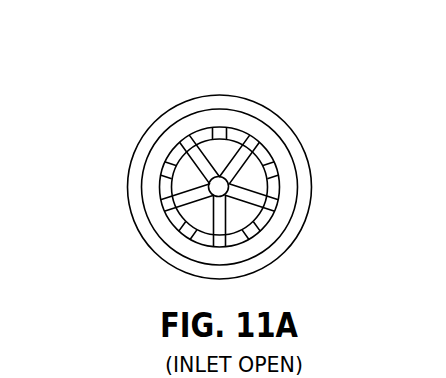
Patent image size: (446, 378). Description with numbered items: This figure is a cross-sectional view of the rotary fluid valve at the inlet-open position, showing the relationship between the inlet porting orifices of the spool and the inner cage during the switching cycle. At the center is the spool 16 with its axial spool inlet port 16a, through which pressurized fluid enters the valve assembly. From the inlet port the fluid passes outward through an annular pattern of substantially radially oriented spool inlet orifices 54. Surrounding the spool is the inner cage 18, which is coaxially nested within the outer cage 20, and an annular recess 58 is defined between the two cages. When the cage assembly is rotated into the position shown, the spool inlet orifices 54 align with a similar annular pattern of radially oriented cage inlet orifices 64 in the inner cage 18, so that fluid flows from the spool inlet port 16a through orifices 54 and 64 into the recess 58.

The spool 16 is at (180, 183).
The spool inlet port 16a is at (218, 186).
The inner cage 18 is at (281, 116).
The outer cage 20 is at (311, 212).
The spool inlet orifices 54 is at (236, 164).
The annular recess 58 is at (247, 127).
The cage inlet orifices 64 is at (250, 140).